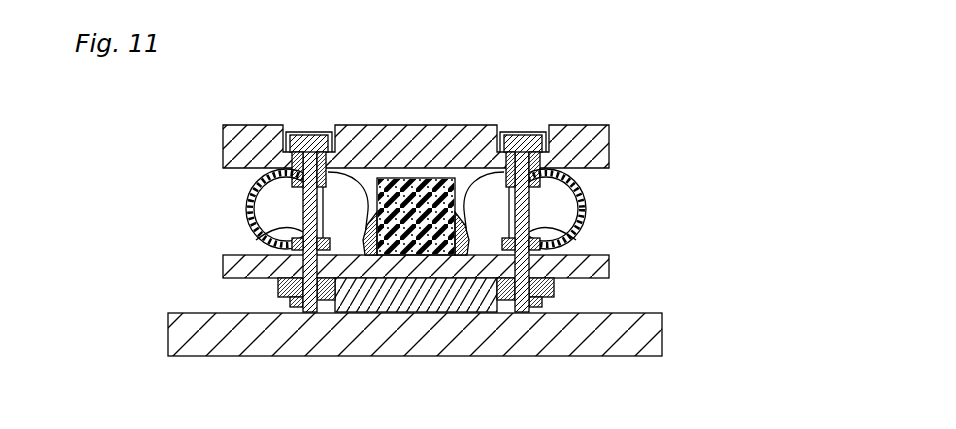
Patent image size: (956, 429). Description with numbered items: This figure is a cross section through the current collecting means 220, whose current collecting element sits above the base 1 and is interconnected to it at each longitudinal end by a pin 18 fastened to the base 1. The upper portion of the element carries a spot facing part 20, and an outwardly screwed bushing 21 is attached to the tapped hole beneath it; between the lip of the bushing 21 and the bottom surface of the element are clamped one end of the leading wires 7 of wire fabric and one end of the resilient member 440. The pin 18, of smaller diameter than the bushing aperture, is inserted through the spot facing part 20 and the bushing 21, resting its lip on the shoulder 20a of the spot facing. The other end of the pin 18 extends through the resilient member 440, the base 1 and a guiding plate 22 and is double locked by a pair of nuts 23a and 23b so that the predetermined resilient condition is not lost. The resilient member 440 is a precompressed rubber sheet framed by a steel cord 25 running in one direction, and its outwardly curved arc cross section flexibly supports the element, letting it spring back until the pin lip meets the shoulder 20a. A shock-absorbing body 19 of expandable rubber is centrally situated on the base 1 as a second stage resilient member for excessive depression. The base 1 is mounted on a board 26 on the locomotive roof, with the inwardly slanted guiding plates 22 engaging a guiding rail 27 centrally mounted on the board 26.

The base 1 is at (238, 267).
The leading wires 7 is at (365, 217).
The pin 18 is at (307, 136).
The shock-absorbing body 19 is at (443, 178).
The spot facing part 20 is at (322, 133).
The shoulder 20a is at (287, 135).
The bushing 21 is at (242, 148).
The guiding plate 22 is at (283, 300).
The nut 23a is at (256, 236).
The nut 23b is at (293, 307).
The steel cord 25 is at (247, 218).
The board 26 is at (432, 332).
The guiding rail 27 is at (382, 295).
The current collecting means 220 is at (427, 167).
The resilient member 440 is at (245, 192).